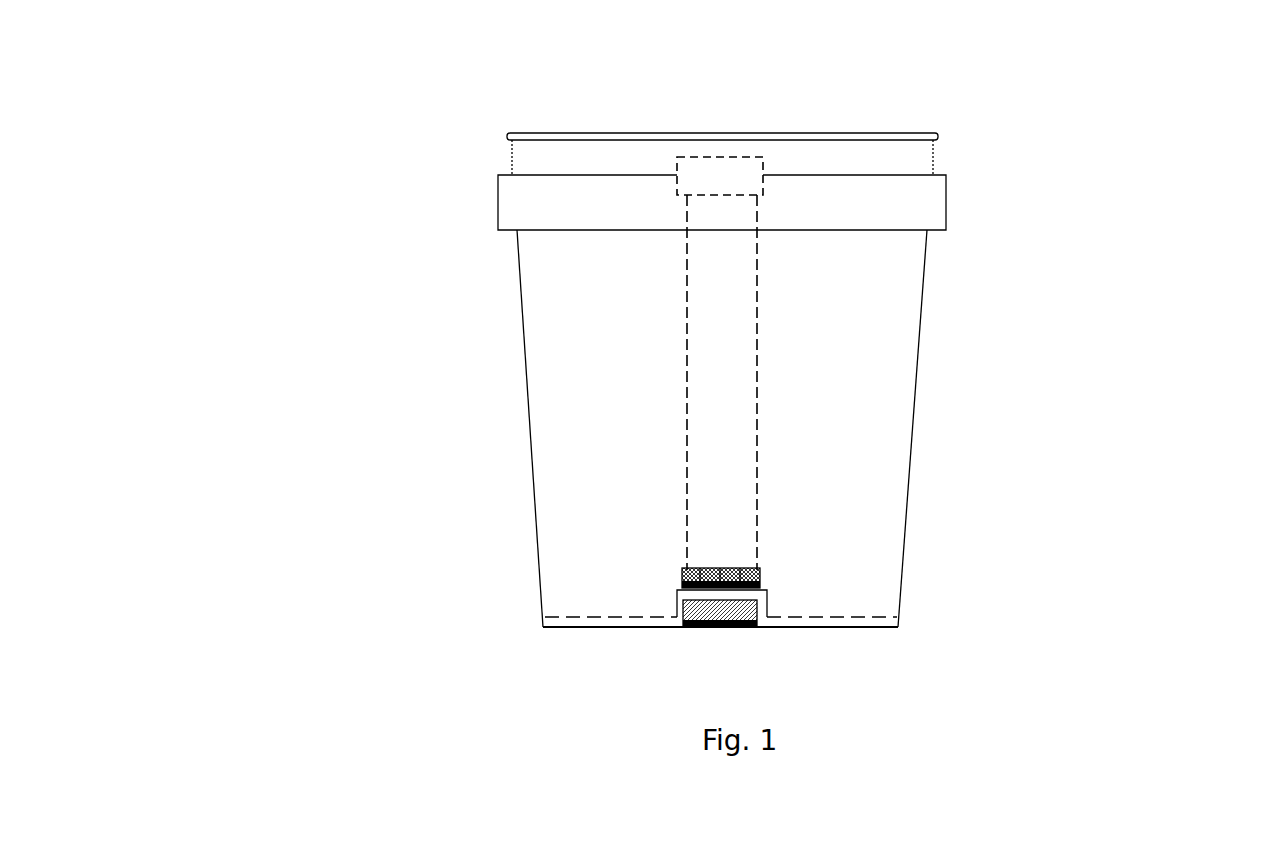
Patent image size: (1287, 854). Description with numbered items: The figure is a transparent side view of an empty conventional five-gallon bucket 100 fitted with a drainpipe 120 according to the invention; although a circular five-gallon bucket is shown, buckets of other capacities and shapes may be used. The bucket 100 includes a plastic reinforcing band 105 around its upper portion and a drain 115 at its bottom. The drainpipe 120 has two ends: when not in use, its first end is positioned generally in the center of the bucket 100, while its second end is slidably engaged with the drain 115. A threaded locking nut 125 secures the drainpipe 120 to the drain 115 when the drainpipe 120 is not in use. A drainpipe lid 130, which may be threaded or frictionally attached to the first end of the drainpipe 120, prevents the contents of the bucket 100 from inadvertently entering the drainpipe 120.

The bucket 100 is at (360, 172).
The plastic reinforcing band 105 is at (969, 174).
The drain 115 is at (663, 598).
The drainpipe 120 is at (667, 404).
The threaded locking nut 125 is at (778, 560).
The drainpipe lid 130 is at (652, 154).